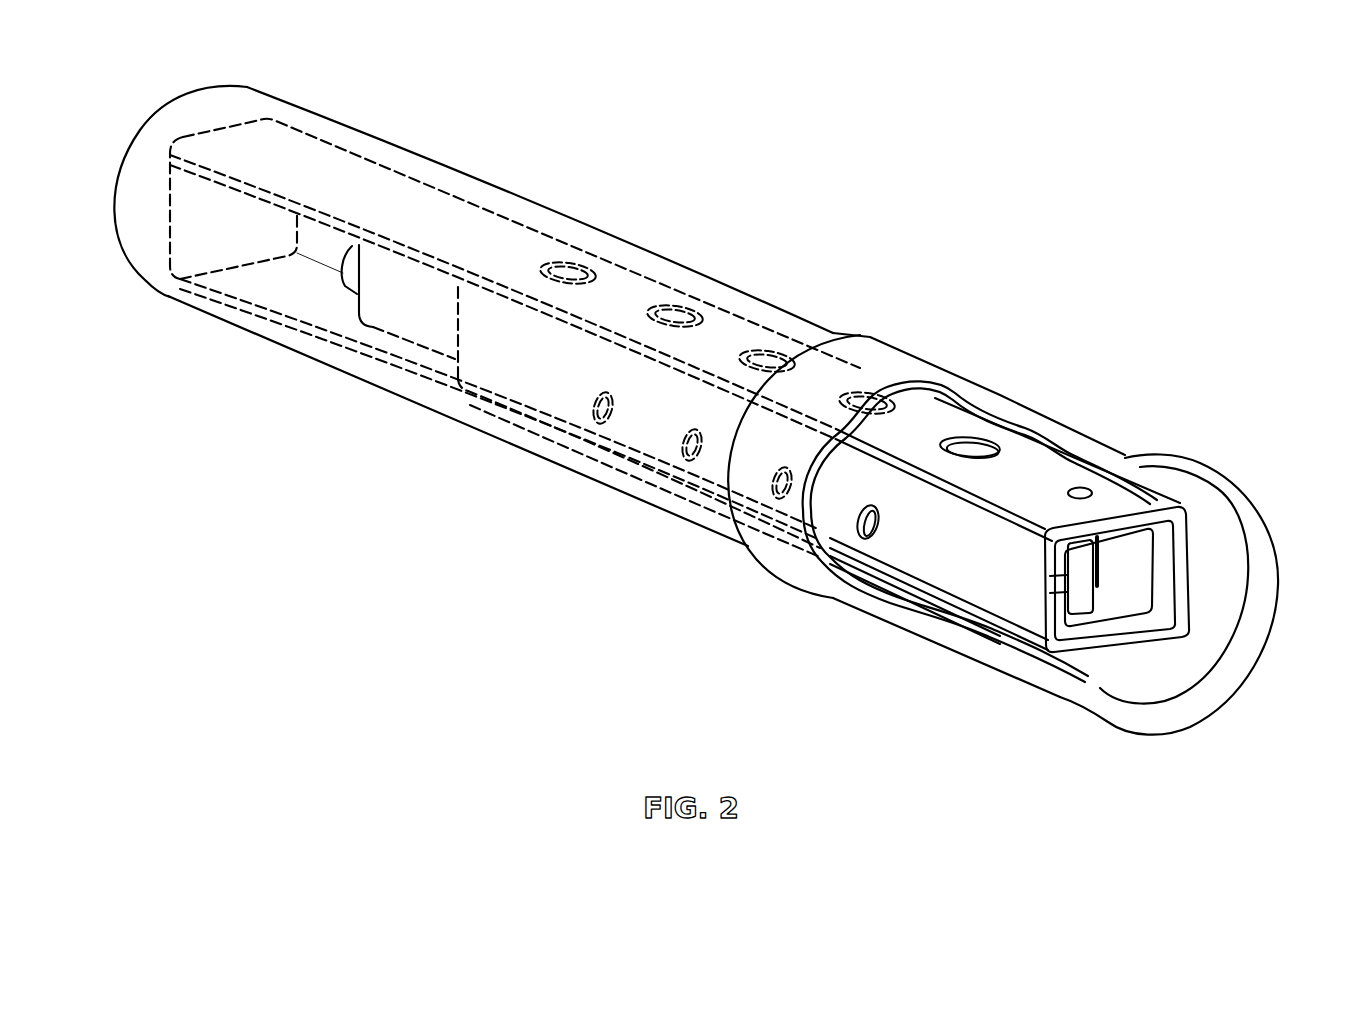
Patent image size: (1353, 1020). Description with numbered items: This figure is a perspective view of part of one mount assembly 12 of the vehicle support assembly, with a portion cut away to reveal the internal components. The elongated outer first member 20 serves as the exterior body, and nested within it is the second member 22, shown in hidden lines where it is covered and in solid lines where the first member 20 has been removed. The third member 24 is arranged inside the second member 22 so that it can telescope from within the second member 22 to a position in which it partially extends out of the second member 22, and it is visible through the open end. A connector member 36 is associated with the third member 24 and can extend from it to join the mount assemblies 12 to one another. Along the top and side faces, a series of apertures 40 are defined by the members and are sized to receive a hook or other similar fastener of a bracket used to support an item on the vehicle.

The mount assembly 12 is at (959, 161).
The first member 20 is at (1125, 652).
The second member 22 is at (518, 385).
The third member 24 is at (412, 313).
The connector member 36 is at (347, 282).
The apertures 40 is at (813, 600).